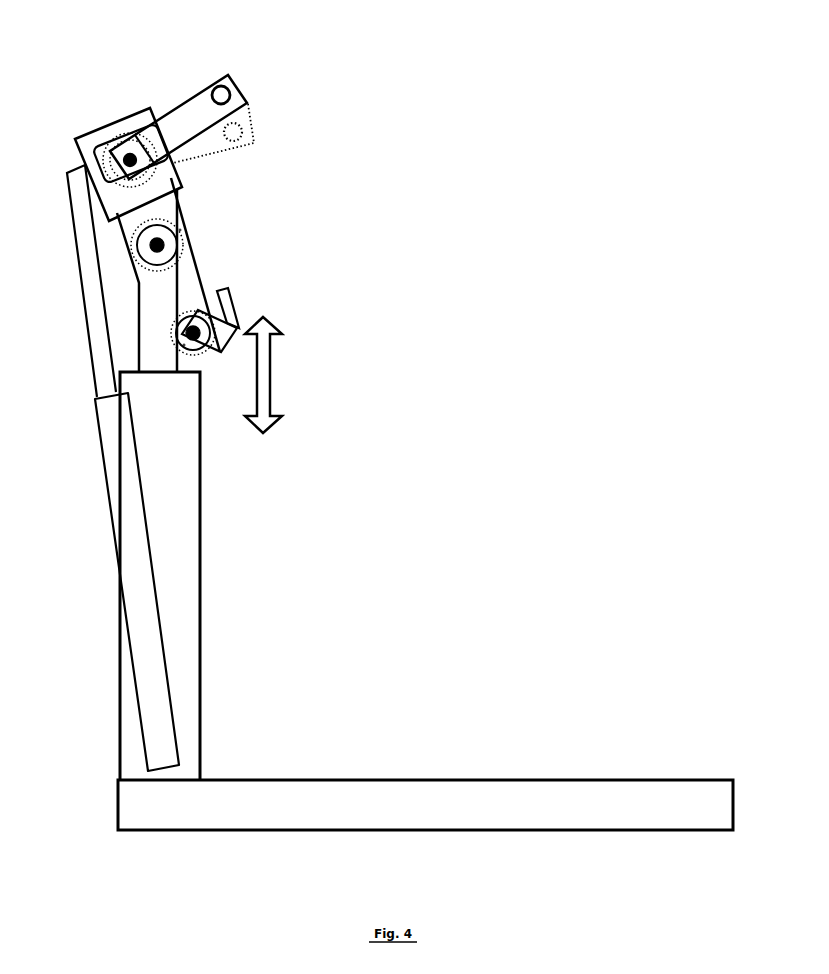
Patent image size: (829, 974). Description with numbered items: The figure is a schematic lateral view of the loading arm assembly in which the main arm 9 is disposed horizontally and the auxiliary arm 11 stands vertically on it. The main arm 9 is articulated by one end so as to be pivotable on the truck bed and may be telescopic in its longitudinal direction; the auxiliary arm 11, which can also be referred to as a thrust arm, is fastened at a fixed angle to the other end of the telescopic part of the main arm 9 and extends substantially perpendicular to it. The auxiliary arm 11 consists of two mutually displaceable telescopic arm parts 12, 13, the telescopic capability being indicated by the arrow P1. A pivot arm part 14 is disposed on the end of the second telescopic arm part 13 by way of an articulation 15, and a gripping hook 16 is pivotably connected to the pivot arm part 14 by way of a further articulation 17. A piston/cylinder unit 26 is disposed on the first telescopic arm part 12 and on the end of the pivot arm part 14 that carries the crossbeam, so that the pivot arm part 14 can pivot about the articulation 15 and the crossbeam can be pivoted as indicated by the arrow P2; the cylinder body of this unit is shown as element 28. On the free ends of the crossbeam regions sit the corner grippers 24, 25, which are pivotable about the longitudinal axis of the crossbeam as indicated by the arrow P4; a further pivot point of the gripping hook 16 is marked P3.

The main arm 9 is at (383, 800).
The auxiliary arm 11 is at (235, 485).
The first telescopic arm part 12 is at (192, 558).
The second telescopic arm part 13 is at (162, 295).
The pivot arm part 14 is at (193, 270).
The articulation 15 is at (162, 240).
The gripping hook 16 is at (236, 322).
The articulation 17 is at (201, 355).
The corner gripper 24 is at (182, 113).
The corner gripper 25 is at (185, 122).
The piston/cylinder unit 26 is at (104, 356).
The gas spring cylinder 28 is at (138, 518).
The arrow indicating telescopic capability P1 is at (272, 375).
The arrow indicating crossbeam pivoting P2 is at (180, 230).
The pivot point P3 is at (184, 345).
The arrow indicating corner gripper pivoting P4 is at (132, 132).